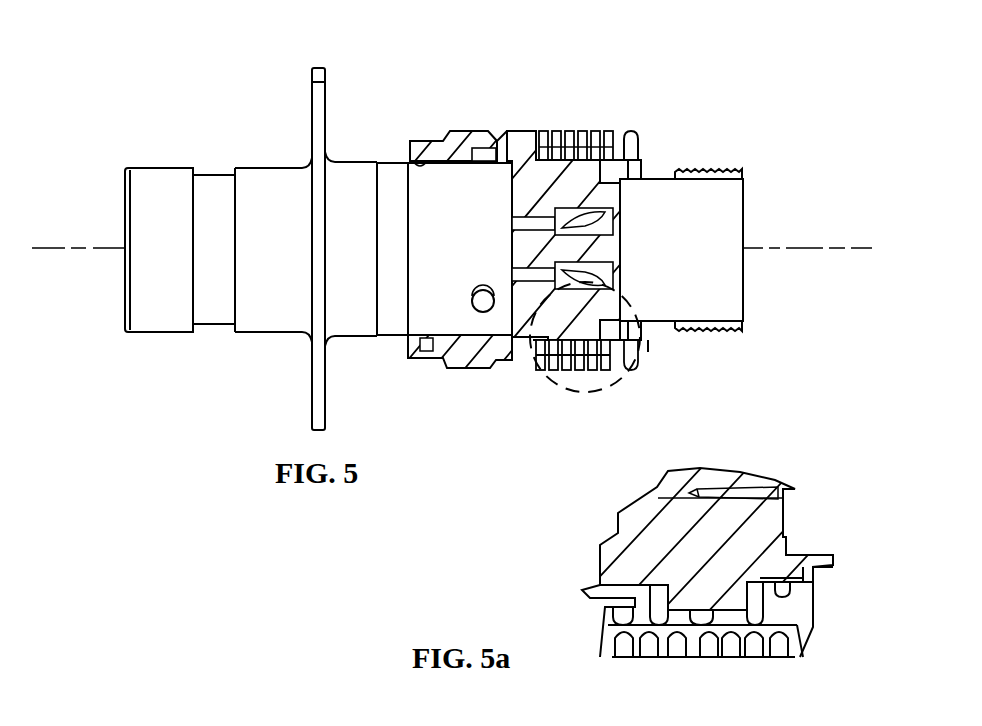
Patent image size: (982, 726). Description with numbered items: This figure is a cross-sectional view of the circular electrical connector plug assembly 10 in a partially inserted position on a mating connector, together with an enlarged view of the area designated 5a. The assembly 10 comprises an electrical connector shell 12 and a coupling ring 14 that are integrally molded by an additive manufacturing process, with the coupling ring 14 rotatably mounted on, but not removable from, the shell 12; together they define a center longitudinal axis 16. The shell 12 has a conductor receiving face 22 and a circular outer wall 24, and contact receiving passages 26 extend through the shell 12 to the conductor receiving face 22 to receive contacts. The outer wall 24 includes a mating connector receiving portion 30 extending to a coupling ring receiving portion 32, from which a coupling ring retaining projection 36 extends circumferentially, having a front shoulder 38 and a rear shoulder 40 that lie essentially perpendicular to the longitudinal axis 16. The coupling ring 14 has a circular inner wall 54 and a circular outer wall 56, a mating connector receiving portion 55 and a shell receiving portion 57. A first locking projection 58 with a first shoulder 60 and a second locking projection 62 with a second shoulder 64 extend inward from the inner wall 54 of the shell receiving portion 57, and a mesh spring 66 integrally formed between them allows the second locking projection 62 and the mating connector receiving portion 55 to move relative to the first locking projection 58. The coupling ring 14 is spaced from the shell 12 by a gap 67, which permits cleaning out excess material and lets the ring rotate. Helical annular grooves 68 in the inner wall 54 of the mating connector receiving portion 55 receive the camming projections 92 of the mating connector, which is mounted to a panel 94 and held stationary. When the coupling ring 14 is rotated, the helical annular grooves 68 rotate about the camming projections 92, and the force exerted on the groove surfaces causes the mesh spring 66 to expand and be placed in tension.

In FIG. 5, the circular electrical connector plug assembly 10 is at (554, 223).
In FIG. 5, the electrical connector shell 12 is at (541, 136).
In FIG. 5, the coupling ring 14 is at (650, 354).
In FIG. 5, the center longitudinal axis 16 is at (823, 248).
In FIG. 5, the conductor receiving face 22 is at (745, 185).
In FIG. 5, the circular outer wall 24 is at (652, 148).
In FIG. 5, the contact receiving passages 26 is at (515, 290).
In FIG. 5, the mating connector receiving portion 30 is at (518, 135).
In FIG. 5, the coupling ring receiving portion 32 is at (595, 135).
In FIG. 5, the coupling ring retaining projection 36 is at (594, 347).
In FIG. 5A, the coupling ring retaining projection 36 is at (703, 594).
In FIG. 5A, the front shoulder 38 is at (660, 592).
In FIG. 5A, the rear shoulder 40 is at (795, 578).
In FIG. 5, the circular inner wall 54 is at (413, 162).
In FIG. 5A, the circular inner wall 54 is at (815, 588).
In FIG. 5, the mating connector receiving portion 55 is at (452, 133).
In FIG. 5, the circular outer wall 56 is at (482, 131).
In FIG. 5, the shell receiving portion 57 is at (577, 131).
In FIG. 5A, the first locking projection 58 is at (615, 648).
In FIG. 5A, the first shoulder 60 is at (617, 612).
In FIG. 5A, the second locking projection 62 is at (773, 652).
In FIG. 5A, the second shoulder 64 is at (793, 603).
In FIG. 5, the mesh spring 66 is at (632, 130).
In FIG. 5, the gap 67 is at (636, 330).
In FIG. 5A, the gap 67 is at (805, 585).
In FIG. 5, the helical annular grooves 68 is at (494, 148).
In FIG. 5, the camming projections 92 is at (471, 308).
In FIG. 5, the panel 94 is at (316, 68).
In FIG. 5, the enlarged area 5a is at (547, 385).